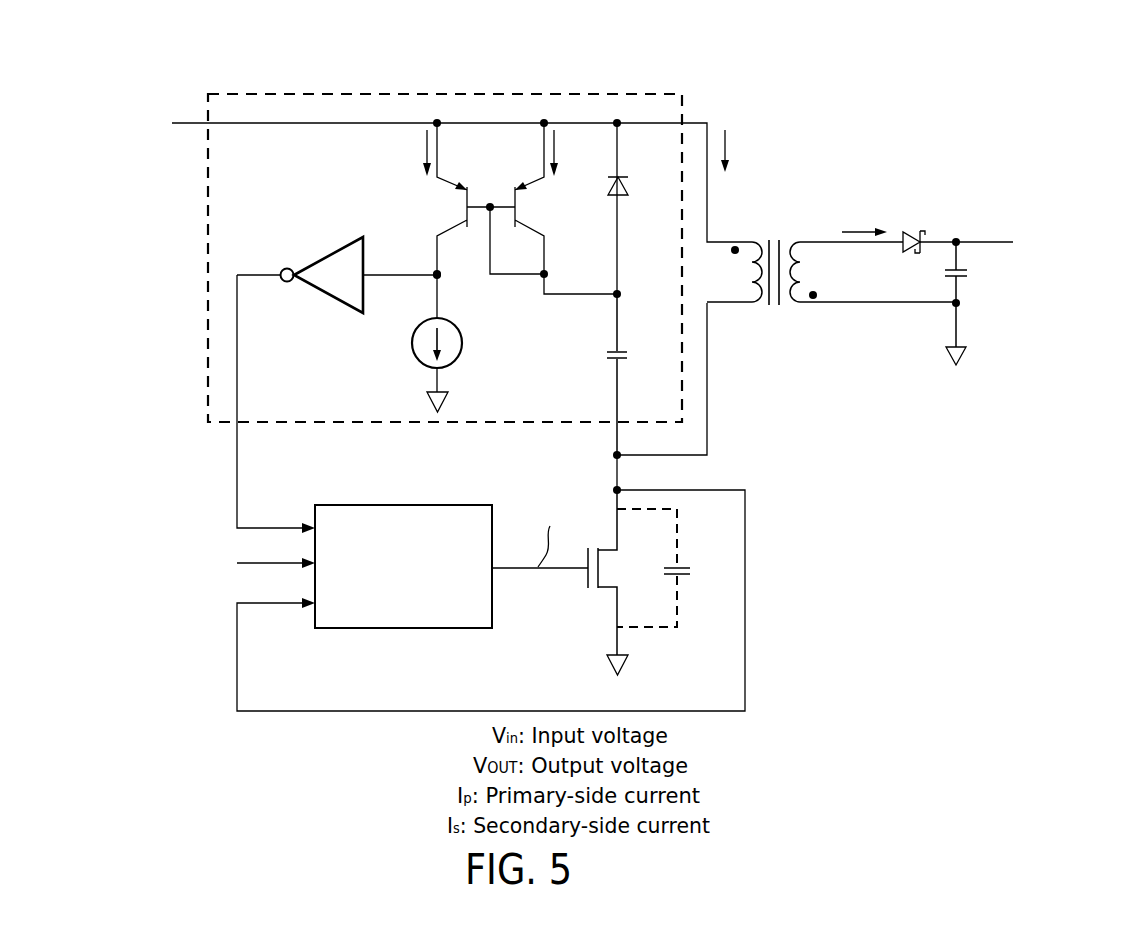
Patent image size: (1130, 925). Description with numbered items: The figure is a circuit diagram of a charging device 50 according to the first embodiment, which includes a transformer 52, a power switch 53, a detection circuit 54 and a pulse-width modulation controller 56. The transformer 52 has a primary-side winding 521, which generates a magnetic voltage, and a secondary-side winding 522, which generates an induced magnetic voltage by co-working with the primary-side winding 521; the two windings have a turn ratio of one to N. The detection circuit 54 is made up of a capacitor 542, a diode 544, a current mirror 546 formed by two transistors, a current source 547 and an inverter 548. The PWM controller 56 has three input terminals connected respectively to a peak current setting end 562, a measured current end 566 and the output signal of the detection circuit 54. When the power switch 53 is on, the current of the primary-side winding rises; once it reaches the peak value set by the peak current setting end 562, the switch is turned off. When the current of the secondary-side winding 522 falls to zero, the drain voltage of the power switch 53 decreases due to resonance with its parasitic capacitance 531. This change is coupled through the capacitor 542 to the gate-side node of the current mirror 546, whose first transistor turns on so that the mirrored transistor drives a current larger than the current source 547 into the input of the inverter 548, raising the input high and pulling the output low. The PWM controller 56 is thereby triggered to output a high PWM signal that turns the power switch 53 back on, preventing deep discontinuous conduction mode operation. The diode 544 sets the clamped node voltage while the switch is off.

The charging device 50 is at (1014, 190).
The transformer 52 is at (831, 272).
The primary-side winding 521 is at (734, 272).
The secondary-side winding 522 is at (873, 272).
The power switch 53 is at (608, 590).
The parasitic capacitance 531 is at (672, 568).
The detection circuit 54 is at (207, 357).
The capacitor 542 is at (610, 366).
The diode 544 is at (628, 190).
The current mirror 546 is at (505, 295).
The current source 547 is at (413, 346).
The inverter 548 is at (341, 246).
The pulse-width modulation controller 56 is at (397, 628).
The peak current setting end 562 is at (265, 563).
The measured current end 566 is at (237, 650).